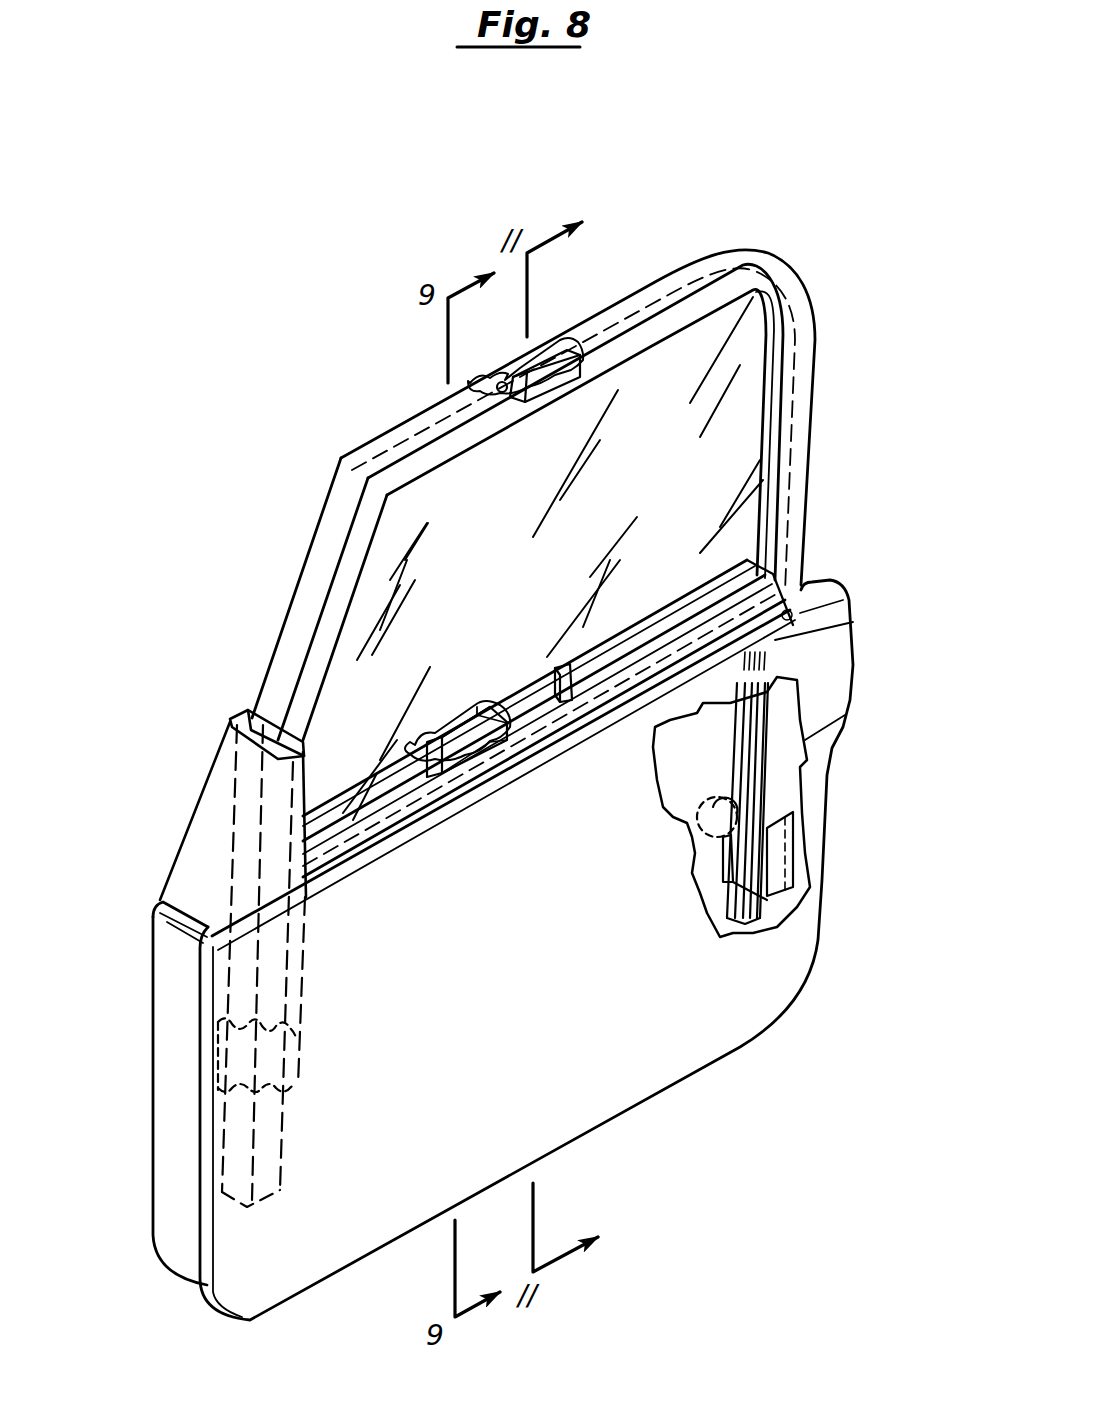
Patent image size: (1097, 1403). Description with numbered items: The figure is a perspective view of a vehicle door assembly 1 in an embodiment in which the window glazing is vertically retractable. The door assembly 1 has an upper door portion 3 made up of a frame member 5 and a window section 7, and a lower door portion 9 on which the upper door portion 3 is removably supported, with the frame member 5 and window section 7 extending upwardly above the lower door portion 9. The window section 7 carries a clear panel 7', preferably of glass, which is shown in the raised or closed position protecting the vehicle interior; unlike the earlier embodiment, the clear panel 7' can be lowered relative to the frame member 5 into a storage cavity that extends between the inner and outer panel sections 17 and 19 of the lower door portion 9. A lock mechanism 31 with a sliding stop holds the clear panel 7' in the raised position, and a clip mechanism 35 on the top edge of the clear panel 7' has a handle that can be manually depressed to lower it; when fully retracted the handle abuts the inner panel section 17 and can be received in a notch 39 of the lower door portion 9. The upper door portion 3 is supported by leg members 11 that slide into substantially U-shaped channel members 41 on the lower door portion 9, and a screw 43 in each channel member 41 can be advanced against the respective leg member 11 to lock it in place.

The door assembly 1 is at (812, 196).
The upper door portion 3 is at (283, 557).
The frame member 5 is at (688, 262).
The window section 7 is at (632, 558).
The clear panel 7' is at (486, 534).
The lower door portion 9 is at (502, 1001).
The leg members 11 is at (776, 793).
The inner panel section 17 is at (155, 1025).
The outer panel section 19 is at (200, 1113).
The lock mechanism 31 is at (457, 718).
The clip mechanism 35 is at (540, 360).
The notch 39 is at (532, 700).
The U-shaped channel members 41 is at (780, 857).
The screw 43 is at (715, 822).